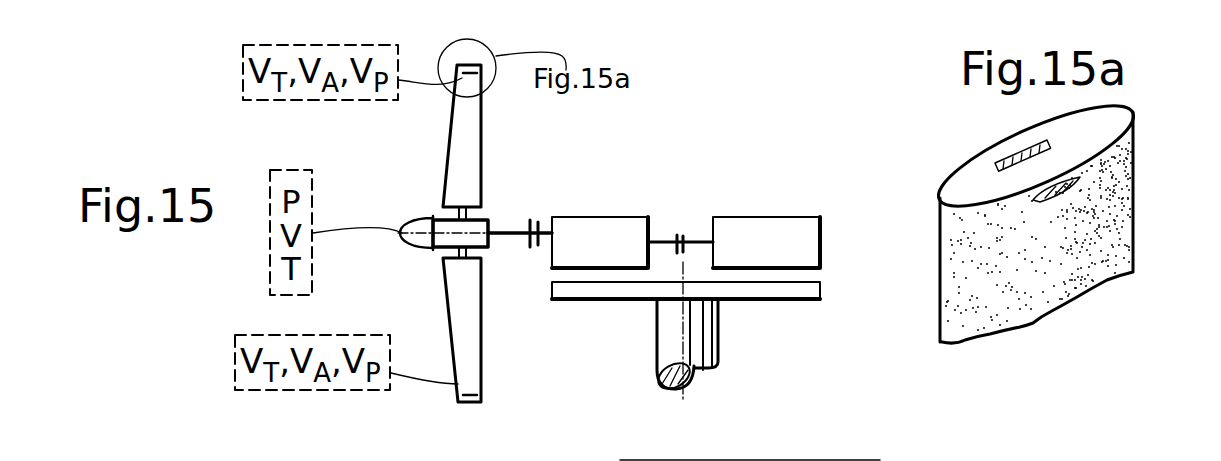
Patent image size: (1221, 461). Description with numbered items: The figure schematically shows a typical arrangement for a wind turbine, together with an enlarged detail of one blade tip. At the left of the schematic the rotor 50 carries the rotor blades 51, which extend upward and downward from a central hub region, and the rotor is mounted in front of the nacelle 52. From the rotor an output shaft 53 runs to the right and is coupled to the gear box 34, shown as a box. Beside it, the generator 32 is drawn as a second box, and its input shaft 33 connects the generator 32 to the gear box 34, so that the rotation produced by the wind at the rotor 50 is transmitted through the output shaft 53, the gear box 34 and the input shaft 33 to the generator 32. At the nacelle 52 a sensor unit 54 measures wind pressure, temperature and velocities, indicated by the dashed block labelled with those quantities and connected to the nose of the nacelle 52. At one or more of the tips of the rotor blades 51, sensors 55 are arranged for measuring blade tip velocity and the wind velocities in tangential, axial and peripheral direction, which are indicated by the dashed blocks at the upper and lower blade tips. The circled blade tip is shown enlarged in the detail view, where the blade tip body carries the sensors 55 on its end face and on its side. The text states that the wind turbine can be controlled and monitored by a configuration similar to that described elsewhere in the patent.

In FIG. 15, the rotor 50 is at (440, 187).
In FIG. 15, the rotor blades 51 is at (470, 311).
In FIG. 15, the nacelle 52 is at (433, 219).
In FIG. 15, the output shaft 53 is at (513, 231).
In FIG. 15, the sensor unit 54 is at (408, 247).
In FIG. 15, the sensors 55 is at (482, 395).
In FIG. 15A, the sensors 55 is at (1070, 195).
In FIG. 15, the input shaft 33 is at (700, 242).
In FIG. 15, the gear box 34 is at (582, 256).
In FIG. 15, the generator 32 is at (752, 256).